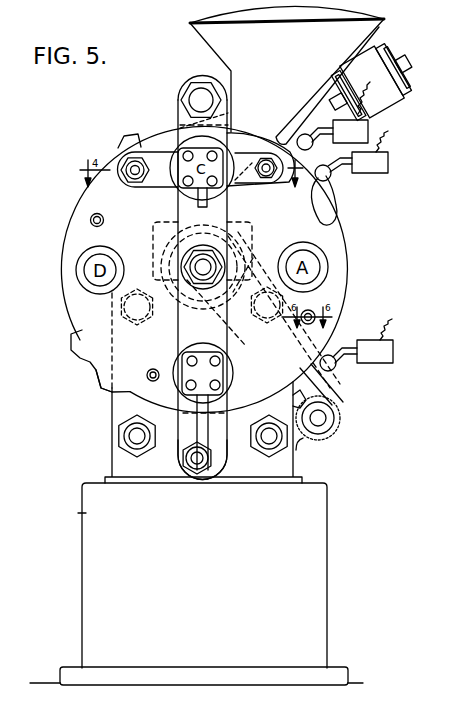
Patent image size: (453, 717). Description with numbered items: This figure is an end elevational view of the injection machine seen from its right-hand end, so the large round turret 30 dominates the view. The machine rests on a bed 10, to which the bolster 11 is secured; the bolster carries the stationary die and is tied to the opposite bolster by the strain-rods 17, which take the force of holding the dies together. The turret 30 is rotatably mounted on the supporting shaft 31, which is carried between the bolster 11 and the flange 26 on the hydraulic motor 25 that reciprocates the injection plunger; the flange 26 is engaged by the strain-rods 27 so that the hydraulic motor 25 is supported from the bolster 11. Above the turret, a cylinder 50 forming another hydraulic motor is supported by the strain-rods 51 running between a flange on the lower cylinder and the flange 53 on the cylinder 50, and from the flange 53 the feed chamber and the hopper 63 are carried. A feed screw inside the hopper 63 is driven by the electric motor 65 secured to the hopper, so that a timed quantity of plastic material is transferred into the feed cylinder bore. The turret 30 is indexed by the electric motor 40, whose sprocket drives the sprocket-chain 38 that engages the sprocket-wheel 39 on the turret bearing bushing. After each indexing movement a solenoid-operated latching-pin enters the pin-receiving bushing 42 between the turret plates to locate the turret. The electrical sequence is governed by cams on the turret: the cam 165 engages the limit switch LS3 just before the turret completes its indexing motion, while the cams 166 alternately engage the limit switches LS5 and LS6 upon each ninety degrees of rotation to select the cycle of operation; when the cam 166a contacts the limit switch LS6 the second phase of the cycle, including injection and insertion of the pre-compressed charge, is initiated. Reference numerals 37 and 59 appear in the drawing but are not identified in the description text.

The bed 10 is at (218, 585).
The bolster 11 is at (122, 462).
The strain-rods 17 is at (124, 436).
The hydraulic motor 25 is at (178, 362).
The flange 26 is at (226, 440).
The strain-rods 27 is at (216, 480).
The turret 30 is at (343, 243).
The supporting shaft 31 is at (195, 267).
The roller 37 is at (333, 436).
The sprocket-chain 38 is at (320, 378).
The sprocket-wheel 39 is at (246, 305).
The electric motor 40 is at (328, 392).
The pin-receiving bushing 42 is at (104, 224).
The cylinder 50 is at (186, 143).
The strain-rods 51 is at (209, 101).
The flange 53 is at (184, 99).
The hidden nut 59 is at (201, 316).
The hopper 63 is at (310, 60).
The electric motor 65 is at (375, 72).
The cam 165 is at (337, 197).
The cams 166 is at (281, 139).
The cam 166a is at (101, 388).
The limit switch LS3 is at (388, 167).
The limit switch LS5 is at (368, 130).
The limit switch LS6 is at (393, 352).